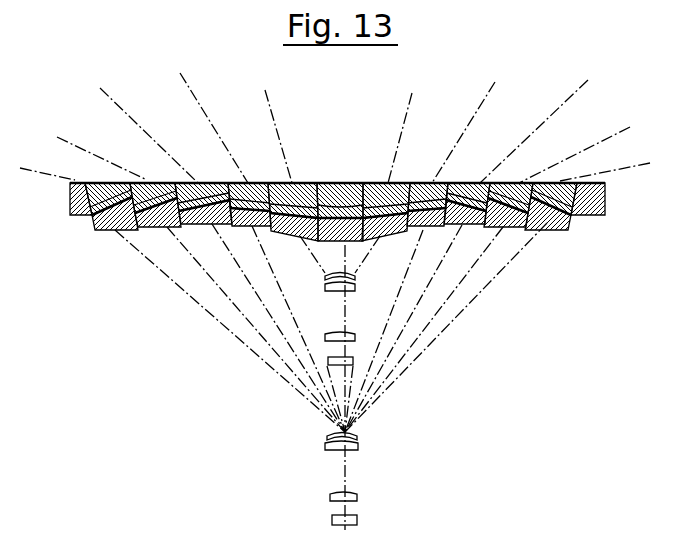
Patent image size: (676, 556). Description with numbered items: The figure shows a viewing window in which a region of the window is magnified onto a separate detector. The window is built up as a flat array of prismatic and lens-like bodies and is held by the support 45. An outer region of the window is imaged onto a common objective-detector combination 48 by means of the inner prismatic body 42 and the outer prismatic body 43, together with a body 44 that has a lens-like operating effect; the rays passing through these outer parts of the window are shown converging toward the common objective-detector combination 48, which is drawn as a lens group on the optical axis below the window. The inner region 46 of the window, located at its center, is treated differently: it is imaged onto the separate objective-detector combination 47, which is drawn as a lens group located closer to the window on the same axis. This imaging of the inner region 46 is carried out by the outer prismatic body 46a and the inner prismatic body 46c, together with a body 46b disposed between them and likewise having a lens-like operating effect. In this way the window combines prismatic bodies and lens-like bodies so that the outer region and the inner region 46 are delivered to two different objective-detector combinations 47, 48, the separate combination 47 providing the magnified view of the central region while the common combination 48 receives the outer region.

The inner prismatic body 42 is at (327, 199).
The outer prismatic body 43 is at (113, 230).
The body having a lens-like operating effect 44 is at (103, 226).
The support 45 is at (78, 180).
The inner region 46 is at (335, 193).
The outer prismatic body 46a is at (278, 182).
The body having a lens-like operating effect 46b is at (307, 182).
The inner prismatic body 46c is at (280, 232).
The separate objective-detector combination 47 is at (358, 368).
The common objective-detector combination 48 is at (362, 430).